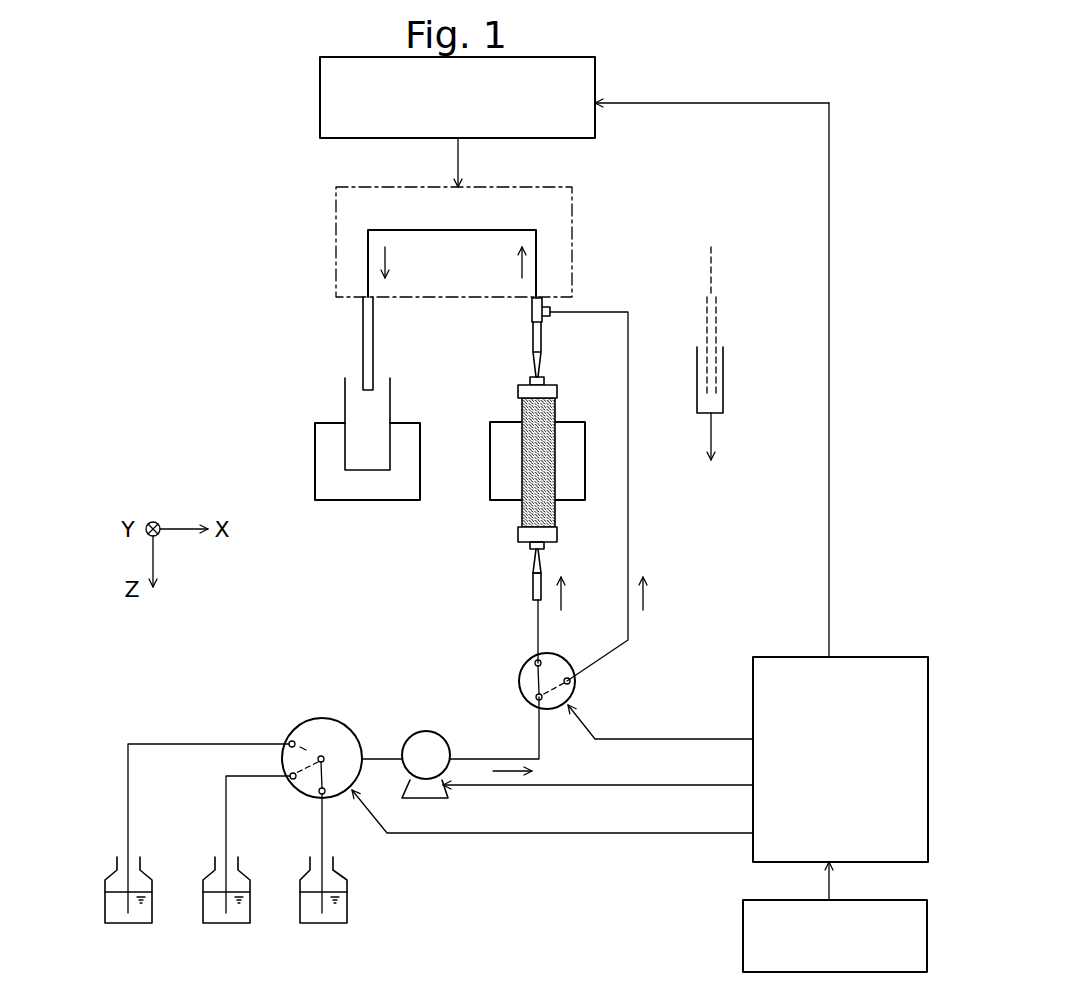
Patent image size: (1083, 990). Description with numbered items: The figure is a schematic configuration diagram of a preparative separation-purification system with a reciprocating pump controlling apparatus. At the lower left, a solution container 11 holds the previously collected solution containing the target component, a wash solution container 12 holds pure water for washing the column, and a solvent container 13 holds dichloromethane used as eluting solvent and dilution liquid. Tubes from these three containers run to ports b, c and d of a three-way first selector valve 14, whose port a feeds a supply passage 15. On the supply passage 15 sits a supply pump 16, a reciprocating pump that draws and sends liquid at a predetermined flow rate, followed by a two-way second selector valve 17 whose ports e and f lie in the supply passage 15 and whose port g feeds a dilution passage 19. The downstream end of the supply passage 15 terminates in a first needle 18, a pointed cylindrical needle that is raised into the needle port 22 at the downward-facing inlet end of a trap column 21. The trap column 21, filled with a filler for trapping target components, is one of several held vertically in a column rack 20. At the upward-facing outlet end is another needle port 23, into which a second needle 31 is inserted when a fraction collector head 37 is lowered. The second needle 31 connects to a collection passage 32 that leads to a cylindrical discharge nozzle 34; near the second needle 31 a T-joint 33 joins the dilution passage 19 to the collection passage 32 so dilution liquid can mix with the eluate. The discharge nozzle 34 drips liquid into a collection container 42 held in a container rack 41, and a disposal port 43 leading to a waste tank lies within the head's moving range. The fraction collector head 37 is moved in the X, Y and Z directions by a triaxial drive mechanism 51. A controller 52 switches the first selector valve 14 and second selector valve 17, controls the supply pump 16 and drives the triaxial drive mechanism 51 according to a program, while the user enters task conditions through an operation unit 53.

The solution container 11 is at (307, 872).
The wash solution container 12 is at (210, 872).
The solvent container 13 is at (112, 872).
The first selector valve 14 is at (320, 718).
The supply passage 15 is at (487, 757).
The supply pump 16 is at (416, 738).
The second selector valve 17 is at (577, 701).
The first needle 18 is at (533, 588).
The dilution passage 19 is at (628, 543).
The column rack 20 is at (490, 486).
The trap column 21 is at (522, 445).
The needle port 22 is at (530, 546).
The needle port 23 is at (530, 381).
The second needle 31 is at (533, 345).
The collection passage 32 is at (500, 230).
The T-joint 33 is at (532, 312).
The discharge nozzle 34 is at (363, 357).
The fraction collector head 37 is at (572, 243).
The container rack 41 is at (315, 485).
The collection container 42 is at (345, 408).
The disposal port 43 is at (723, 371).
The triaxial drive mechanism 51 is at (320, 97).
The controller 52 is at (928, 764).
The operation unit 53 is at (928, 932).